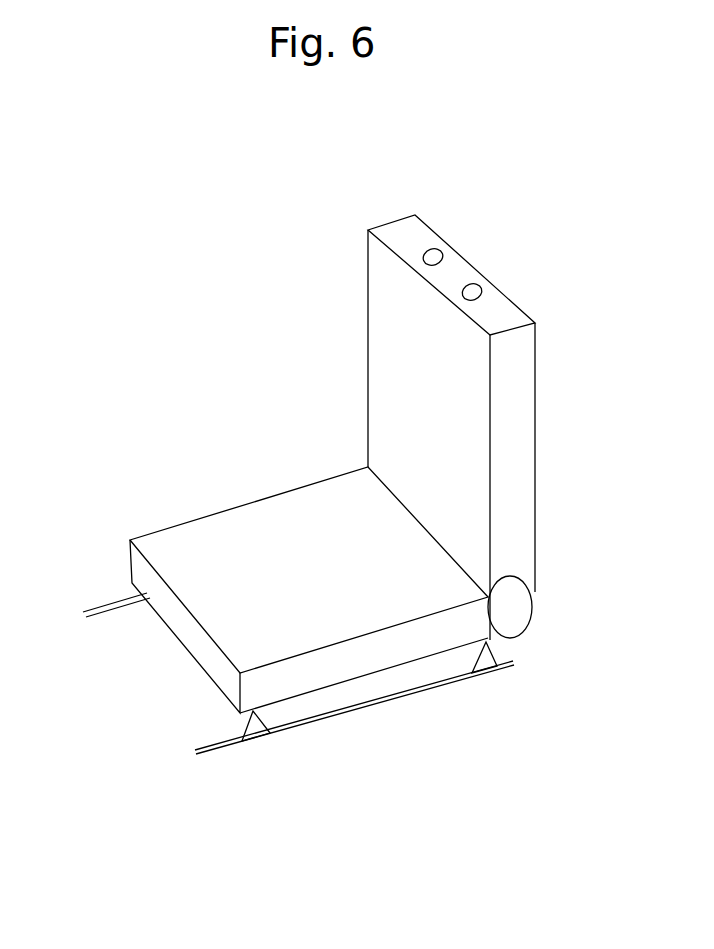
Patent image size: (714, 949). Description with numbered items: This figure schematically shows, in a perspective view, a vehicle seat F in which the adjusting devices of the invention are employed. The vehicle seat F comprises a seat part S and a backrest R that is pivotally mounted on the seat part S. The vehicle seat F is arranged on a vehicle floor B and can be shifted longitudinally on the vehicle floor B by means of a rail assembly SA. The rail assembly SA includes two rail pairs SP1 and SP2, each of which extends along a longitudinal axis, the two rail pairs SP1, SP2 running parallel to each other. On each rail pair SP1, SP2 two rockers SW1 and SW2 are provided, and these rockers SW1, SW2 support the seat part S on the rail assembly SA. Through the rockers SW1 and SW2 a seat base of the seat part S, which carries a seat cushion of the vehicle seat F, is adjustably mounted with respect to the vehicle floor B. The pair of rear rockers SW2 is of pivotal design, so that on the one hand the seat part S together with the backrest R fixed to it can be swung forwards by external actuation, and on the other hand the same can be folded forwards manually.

The vehicle seat F is at (254, 318).
The seat part S is at (189, 518).
The backrest R is at (518, 393).
The rail pair SP1 is at (103, 606).
The rail pair SP2 is at (202, 748).
The rocker SW1 is at (258, 727).
The rear rocker SW2 is at (487, 645).
The vehicle floor B is at (438, 761).
The rail assembly SA is at (215, 758).